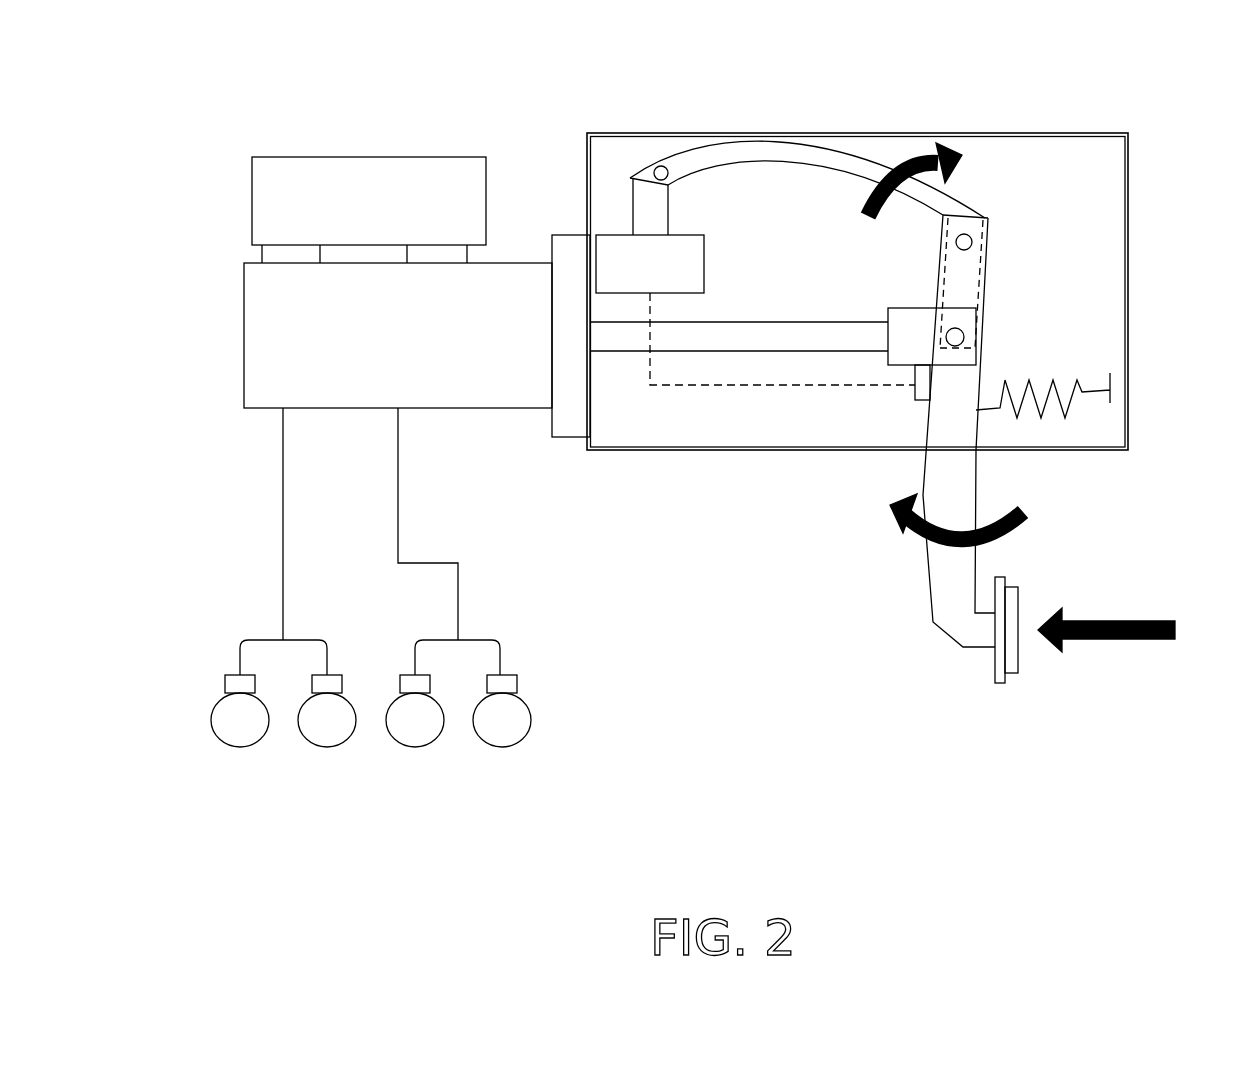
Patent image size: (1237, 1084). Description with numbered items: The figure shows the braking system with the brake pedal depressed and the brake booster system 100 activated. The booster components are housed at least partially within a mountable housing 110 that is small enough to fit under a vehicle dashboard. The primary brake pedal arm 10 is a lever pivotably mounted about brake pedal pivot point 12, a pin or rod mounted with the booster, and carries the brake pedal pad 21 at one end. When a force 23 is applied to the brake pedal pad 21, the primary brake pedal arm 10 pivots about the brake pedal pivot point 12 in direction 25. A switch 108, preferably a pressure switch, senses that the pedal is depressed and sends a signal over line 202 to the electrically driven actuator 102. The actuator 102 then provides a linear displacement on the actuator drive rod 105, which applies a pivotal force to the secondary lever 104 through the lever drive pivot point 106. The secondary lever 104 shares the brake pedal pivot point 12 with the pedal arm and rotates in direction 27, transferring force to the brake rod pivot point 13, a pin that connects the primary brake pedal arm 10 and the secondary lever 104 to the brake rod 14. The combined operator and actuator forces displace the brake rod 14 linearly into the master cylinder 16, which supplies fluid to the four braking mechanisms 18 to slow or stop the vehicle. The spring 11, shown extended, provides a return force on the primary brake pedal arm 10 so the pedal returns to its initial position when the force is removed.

The primary brake pedal arm 10 is at (932, 562).
The spring 11 is at (1065, 390).
The brake pedal pivot point 12 is at (968, 242).
The brake rod pivot point 13 is at (950, 335).
The brake rod 14 is at (697, 340).
The master cylinder 16 is at (272, 336).
The braking mechanisms 18 is at (237, 673).
The brake pedal pad 21 is at (1020, 620).
The force 23 is at (1115, 640).
The direction 25 is at (1010, 512).
The direction 27 is at (957, 150).
The brake booster system 100 is at (1093, 178).
The actuator 102 is at (677, 263).
The secondary lever 104 is at (797, 158).
The actuator drive rod 105 is at (642, 227).
The lever drive pivot point 106 is at (662, 166).
The switch 108 is at (920, 403).
The mountable housing 110 is at (1072, 133).
The line 202 is at (785, 385).